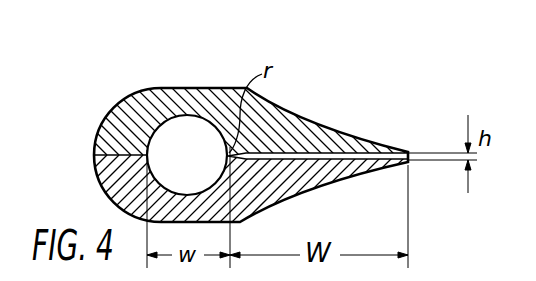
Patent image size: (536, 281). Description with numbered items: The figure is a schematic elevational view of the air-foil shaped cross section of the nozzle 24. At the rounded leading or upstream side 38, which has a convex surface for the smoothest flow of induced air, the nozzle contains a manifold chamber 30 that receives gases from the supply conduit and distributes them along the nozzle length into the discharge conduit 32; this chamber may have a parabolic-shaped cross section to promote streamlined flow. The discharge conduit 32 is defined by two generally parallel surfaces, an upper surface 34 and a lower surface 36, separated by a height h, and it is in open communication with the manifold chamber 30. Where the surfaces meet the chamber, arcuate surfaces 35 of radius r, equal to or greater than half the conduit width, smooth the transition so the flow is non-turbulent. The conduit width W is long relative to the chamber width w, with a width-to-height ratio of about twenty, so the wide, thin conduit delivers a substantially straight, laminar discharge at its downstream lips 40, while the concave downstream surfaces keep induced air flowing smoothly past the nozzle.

The cleat body 24 is at (144, 82).
The manifold chamber 30 is at (186, 145).
The discharge conduit 32 is at (352, 135).
The upper surface 34 is at (306, 159).
The arcuate surfaces 35 is at (230, 157).
The lower surface 36 is at (302, 153).
The leading side 38 is at (95, 155).
The tip edges 40 is at (436, 124).